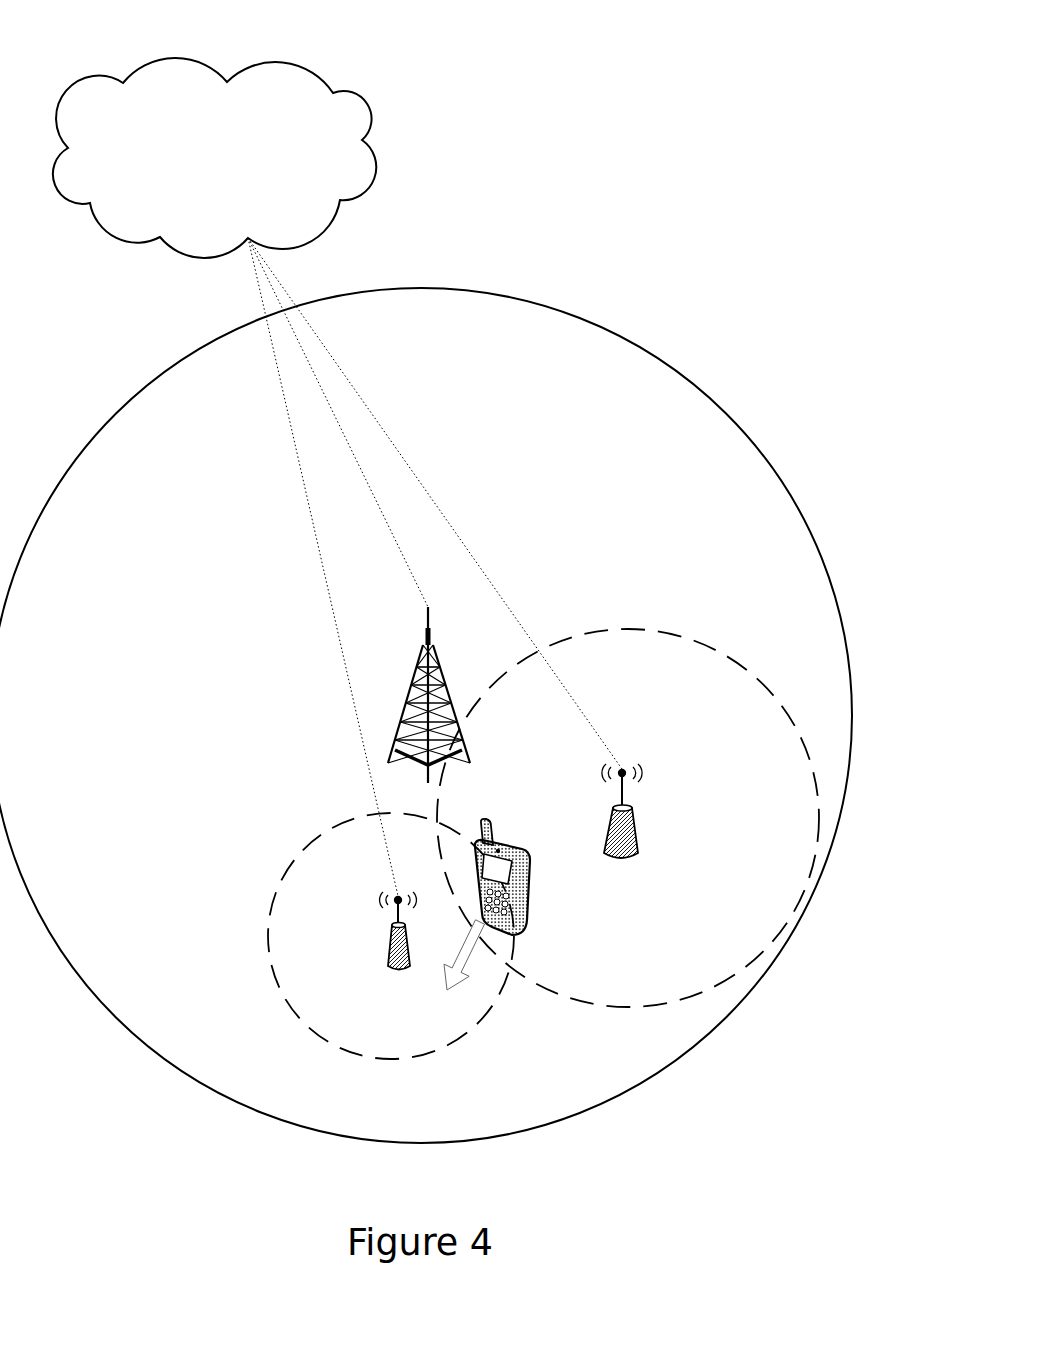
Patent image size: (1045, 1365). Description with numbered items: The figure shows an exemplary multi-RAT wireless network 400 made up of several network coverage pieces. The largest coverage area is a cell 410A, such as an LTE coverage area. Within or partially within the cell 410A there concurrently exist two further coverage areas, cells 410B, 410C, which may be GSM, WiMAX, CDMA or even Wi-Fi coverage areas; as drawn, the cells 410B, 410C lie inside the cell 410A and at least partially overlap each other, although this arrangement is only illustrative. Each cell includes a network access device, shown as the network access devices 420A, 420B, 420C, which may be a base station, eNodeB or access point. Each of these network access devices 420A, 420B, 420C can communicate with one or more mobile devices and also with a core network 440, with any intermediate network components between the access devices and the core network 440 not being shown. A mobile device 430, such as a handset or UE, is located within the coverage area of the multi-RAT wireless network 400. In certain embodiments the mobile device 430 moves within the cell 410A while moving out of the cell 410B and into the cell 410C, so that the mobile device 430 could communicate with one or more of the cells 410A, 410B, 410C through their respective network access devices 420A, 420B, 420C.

The multi-RAT wireless network 400 is at (758, 88).
The core network 440 is at (229, 170).
The cell 410A is at (444, 326).
The cell 410B is at (653, 667).
The cell 410C is at (423, 1051).
The network access device 420A is at (564, 532).
The network access device 420B is at (736, 635).
The network access device 420C is at (275, 1022).
The mobile device 430 is at (568, 985).